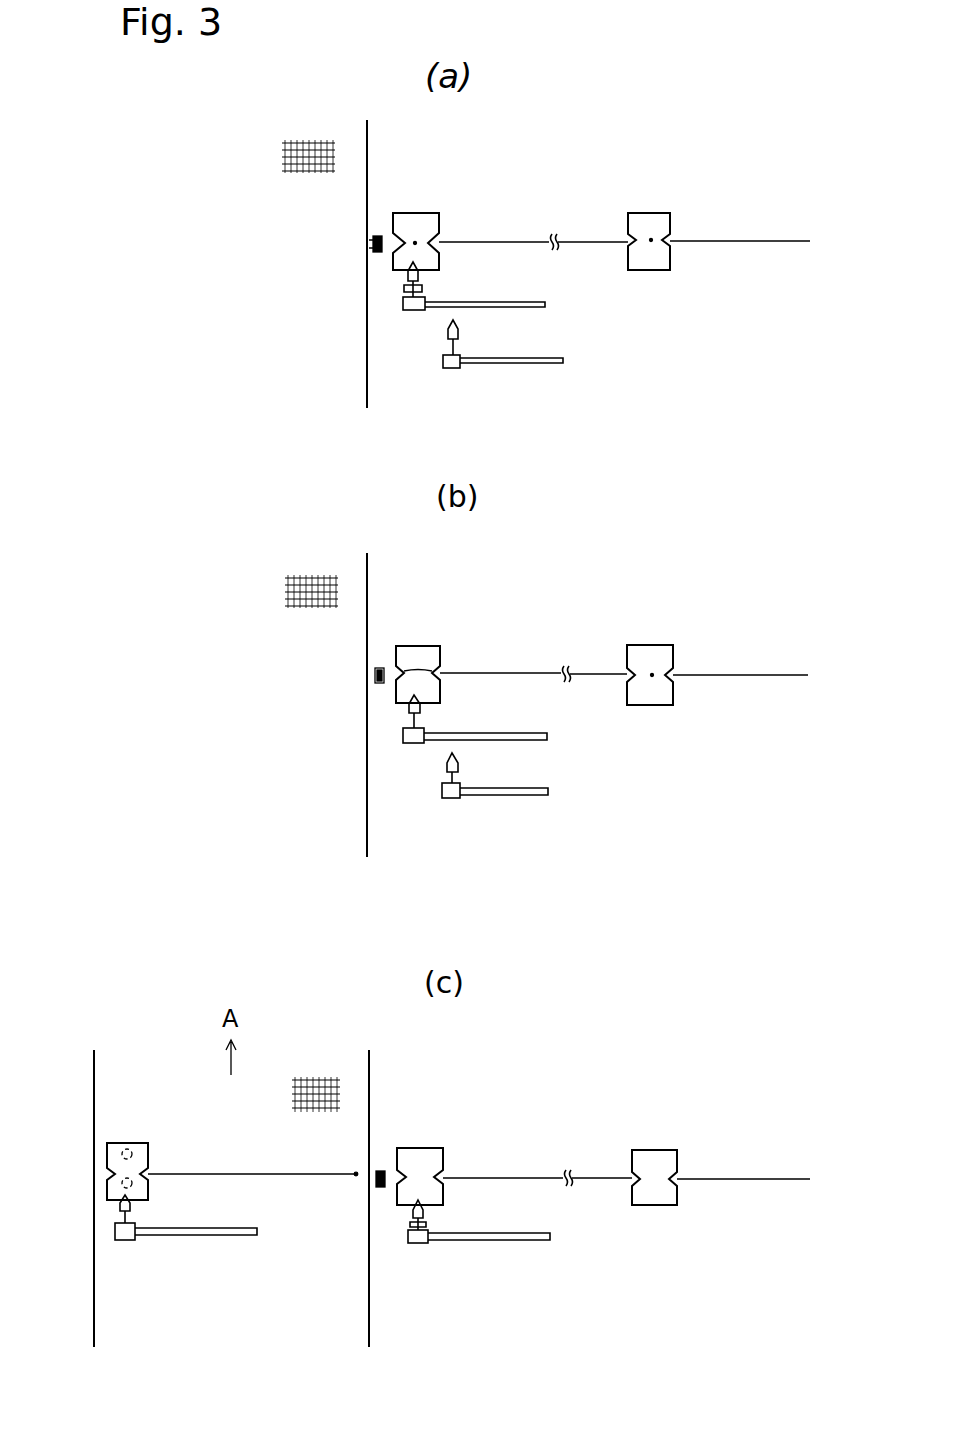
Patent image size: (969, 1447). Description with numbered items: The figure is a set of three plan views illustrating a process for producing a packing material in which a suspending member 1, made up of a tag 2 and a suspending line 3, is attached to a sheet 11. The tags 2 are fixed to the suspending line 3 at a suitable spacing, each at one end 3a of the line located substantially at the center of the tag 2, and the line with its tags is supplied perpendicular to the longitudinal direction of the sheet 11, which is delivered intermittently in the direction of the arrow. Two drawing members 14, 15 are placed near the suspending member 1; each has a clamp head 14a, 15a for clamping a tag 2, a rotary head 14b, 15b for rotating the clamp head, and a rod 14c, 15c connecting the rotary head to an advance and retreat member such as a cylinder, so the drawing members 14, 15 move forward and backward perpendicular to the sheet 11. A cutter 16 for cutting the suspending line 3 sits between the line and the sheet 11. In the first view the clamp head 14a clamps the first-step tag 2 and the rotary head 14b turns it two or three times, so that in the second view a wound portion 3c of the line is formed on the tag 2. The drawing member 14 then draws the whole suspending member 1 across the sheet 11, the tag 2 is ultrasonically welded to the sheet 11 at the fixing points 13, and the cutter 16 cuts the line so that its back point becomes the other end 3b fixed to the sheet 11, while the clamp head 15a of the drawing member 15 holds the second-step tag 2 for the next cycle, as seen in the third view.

The suspending member 1 is at (771, 204).
The tag 2 is at (405, 213).
The suspending line 3 is at (525, 240).
The one end of the suspending line 3a is at (415, 242).
The other end of the suspending line 3b is at (355, 1177).
The wound portion 3c is at (428, 668).
The sheet 11 is at (355, 155).
The fixing points 13 is at (127, 1148).
The drawing member 14 is at (467, 290).
The clamp head 14a is at (407, 273).
The rotary head 14b is at (407, 303).
The rod 14c is at (545, 304).
The drawing member 15 is at (492, 351).
The clamp head 15a is at (448, 332).
The rotary head 15b is at (450, 370).
The rod 15c is at (553, 366).
The cutter 16 is at (370, 240).